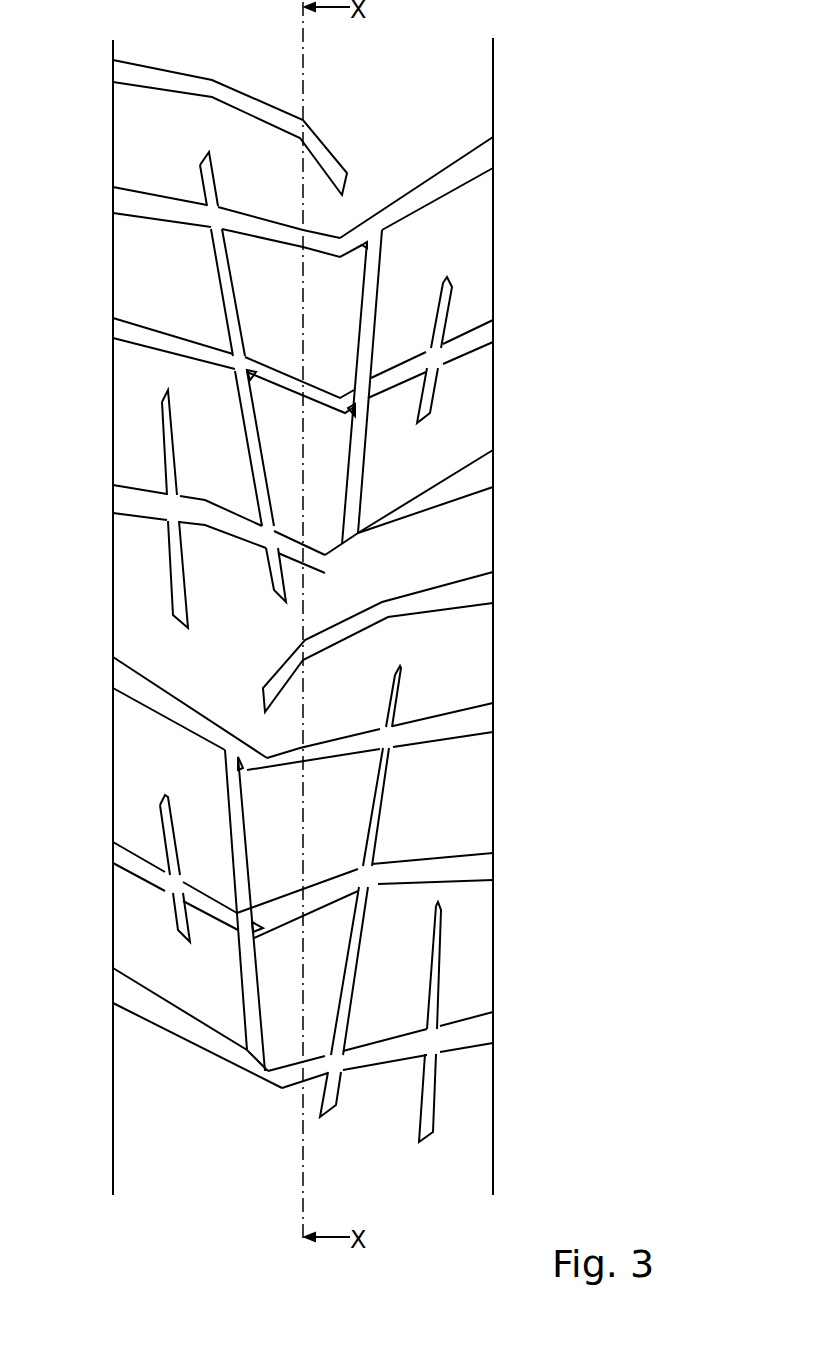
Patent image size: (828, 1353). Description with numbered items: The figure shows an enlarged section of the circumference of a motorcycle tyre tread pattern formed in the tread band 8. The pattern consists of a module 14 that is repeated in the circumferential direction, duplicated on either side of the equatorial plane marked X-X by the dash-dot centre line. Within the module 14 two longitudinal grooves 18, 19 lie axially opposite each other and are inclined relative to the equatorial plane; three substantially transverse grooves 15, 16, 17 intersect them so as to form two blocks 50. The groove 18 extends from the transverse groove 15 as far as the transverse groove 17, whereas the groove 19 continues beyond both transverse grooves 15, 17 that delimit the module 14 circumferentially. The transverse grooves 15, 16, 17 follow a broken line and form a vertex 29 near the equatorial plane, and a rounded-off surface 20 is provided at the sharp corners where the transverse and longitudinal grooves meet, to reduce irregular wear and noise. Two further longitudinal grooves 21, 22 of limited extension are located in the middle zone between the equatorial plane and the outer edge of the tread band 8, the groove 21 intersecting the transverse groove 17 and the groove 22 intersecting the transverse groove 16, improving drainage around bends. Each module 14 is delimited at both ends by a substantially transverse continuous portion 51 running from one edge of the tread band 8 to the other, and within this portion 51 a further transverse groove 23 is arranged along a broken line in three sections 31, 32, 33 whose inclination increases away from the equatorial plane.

The tread band 8 is at (473, 81).
The module 14 is at (388, 247).
The transverse groove 15 is at (455, 150).
The transverse groove 16 is at (483, 320).
The transverse groove 17 is at (482, 452).
The longitudinal groove 18 is at (367, 448).
The longitudinal groove 19 is at (248, 462).
The rounded-off surface 20 is at (362, 233).
The longitudinal groove 21 is at (190, 600).
The longitudinal groove 22 is at (438, 392).
The transverse groove 23 is at (160, 62).
The vertex 29 is at (340, 258).
The section 31 is at (282, 677).
The section 32 is at (340, 633).
The section 33 is at (445, 600).
The block 50 is at (301, 603).
The continuous portion 51 is at (475, 627).